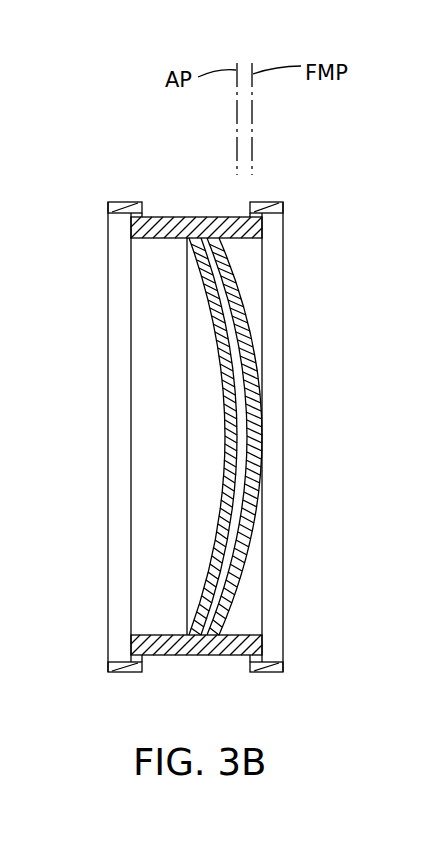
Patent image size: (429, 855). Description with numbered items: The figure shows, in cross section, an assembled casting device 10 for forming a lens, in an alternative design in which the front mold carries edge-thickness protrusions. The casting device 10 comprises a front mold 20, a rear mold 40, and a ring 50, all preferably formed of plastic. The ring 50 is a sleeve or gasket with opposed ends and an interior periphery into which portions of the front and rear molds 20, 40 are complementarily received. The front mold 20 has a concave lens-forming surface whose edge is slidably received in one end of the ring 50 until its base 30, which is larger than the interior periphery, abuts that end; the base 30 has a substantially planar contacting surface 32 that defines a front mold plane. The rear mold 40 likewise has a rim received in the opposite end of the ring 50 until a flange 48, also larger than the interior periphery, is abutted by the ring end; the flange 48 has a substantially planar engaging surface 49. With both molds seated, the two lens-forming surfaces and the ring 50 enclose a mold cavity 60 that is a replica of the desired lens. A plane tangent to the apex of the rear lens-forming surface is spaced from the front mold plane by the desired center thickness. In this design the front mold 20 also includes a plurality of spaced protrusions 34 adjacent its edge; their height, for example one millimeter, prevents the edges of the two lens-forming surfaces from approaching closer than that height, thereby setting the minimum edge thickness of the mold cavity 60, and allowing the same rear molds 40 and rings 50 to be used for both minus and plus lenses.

The casting device 10 is at (312, 708).
The front mold 20 is at (275, 326).
The base 30 is at (271, 201).
The contacting surface 32 is at (247, 665).
The protrusions 34 is at (203, 218).
The rear mold 40 is at (107, 436).
The flange 48 is at (119, 201).
The engaging surface 49 is at (147, 671).
The ring 50 is at (190, 657).
The mold cavity 60 is at (248, 440).